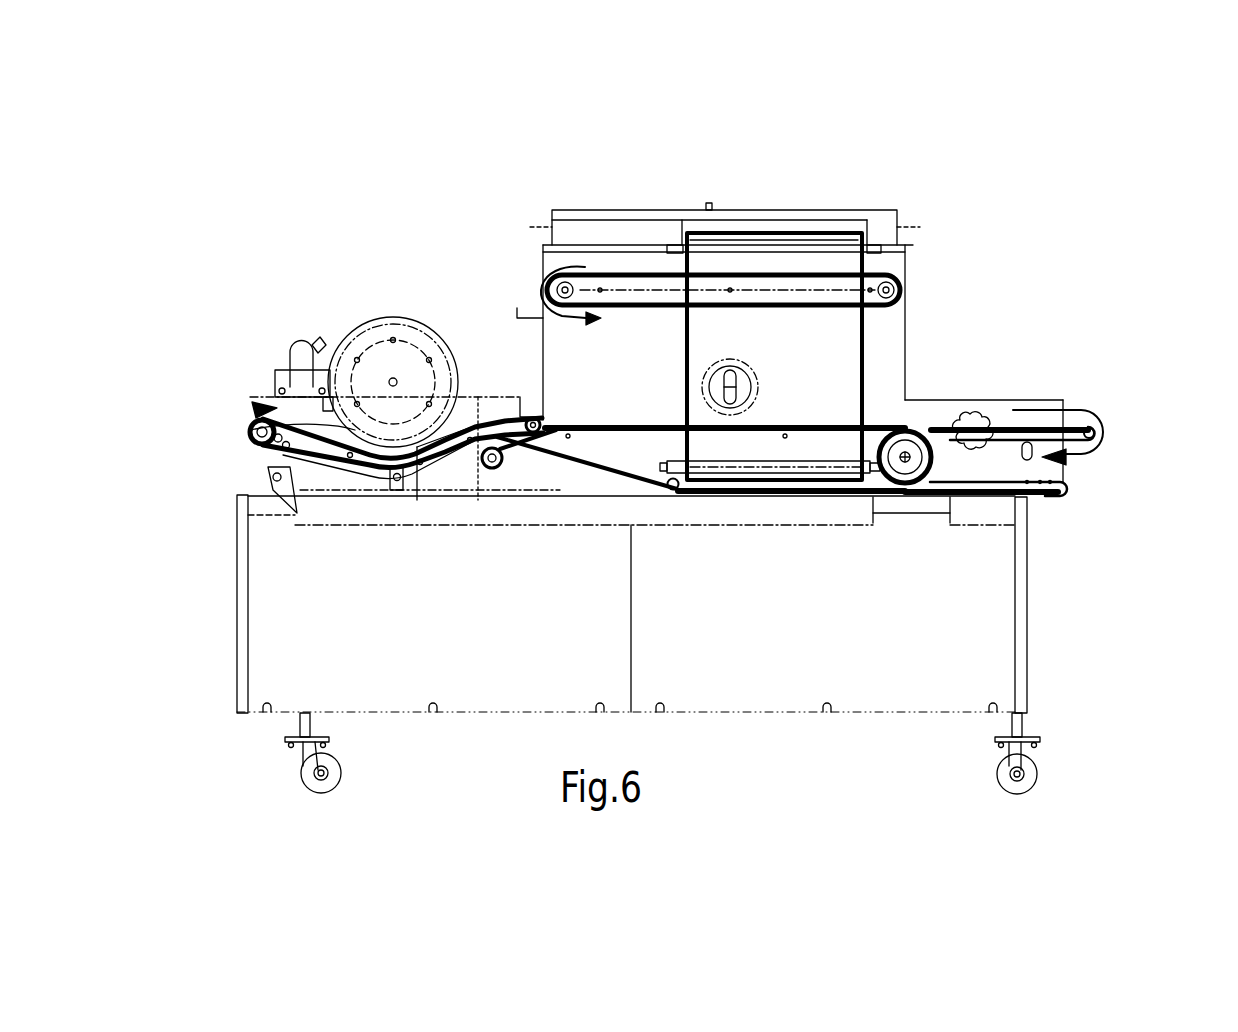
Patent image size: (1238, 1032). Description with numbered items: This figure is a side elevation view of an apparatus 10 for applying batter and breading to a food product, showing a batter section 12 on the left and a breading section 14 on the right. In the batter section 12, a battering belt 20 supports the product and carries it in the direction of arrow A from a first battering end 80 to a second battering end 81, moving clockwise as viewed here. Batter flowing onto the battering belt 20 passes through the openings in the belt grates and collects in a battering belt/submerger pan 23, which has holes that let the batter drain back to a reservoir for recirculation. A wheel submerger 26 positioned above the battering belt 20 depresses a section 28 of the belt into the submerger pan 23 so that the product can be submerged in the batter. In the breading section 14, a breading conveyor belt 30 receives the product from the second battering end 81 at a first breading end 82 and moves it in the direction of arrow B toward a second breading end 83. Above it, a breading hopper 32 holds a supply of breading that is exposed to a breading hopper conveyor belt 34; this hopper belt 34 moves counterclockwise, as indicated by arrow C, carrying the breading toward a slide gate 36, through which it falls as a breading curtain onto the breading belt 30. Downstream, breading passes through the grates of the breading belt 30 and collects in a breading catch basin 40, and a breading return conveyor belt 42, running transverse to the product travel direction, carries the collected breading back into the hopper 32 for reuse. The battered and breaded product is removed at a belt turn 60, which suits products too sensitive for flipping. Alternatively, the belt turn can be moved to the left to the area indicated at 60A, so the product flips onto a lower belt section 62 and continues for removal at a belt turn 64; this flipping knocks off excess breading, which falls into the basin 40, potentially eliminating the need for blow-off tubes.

The apparatus 10 is at (404, 216).
The batter section 12 is at (272, 266).
The breading section 14 is at (1010, 234).
The battering belt 20 is at (468, 413).
The battering belt/submerger pan 23 is at (308, 425).
The wheel submerger 26 is at (383, 323).
The section of the battering belt 28 is at (415, 455).
The breading conveyor belt 30 is at (914, 428).
The breading hopper 32 is at (650, 233).
The breading hopper conveyor belt 34 is at (624, 275).
The slide gate 36 is at (517, 308).
The breading catch basin 40 is at (625, 452).
The breading return conveyor belt 42 is at (785, 233).
The belt turn 60 is at (1085, 412).
The area 60A is at (992, 408).
The lower belt section 62 is at (988, 460).
The belt turn 64 is at (1070, 490).
The first battering end 80 is at (262, 432).
The second battering end 81 is at (538, 417).
The first breading end 82 is at (494, 470).
The second breading end 83 is at (1096, 427).
The arrow A is at (277, 460).
The arrow B is at (1104, 432).
The arrow C is at (545, 266).